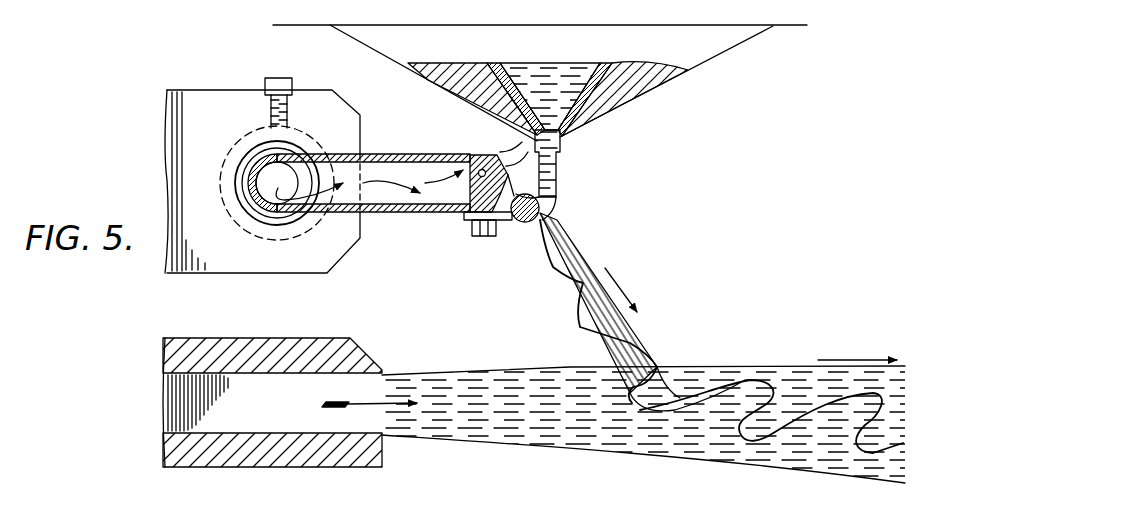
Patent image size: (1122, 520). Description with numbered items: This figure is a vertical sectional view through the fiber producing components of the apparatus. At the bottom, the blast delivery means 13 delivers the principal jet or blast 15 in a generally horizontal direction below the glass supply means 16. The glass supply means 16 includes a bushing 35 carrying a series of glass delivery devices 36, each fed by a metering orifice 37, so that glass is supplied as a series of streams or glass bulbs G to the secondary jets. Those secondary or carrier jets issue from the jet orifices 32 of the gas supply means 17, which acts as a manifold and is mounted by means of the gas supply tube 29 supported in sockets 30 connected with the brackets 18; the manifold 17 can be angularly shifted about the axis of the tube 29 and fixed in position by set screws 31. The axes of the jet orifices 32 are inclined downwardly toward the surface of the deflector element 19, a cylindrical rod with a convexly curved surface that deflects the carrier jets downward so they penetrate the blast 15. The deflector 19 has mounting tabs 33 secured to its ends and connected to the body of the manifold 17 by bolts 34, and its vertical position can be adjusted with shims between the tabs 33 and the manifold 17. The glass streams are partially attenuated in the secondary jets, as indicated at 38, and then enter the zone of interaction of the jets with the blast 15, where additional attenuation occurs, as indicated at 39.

The blast delivery means 13 is at (272, 350).
The principal jet or blast 15 is at (445, 385).
The glass supply means 16 is at (750, 41).
The gas supply means 17 is at (370, 155).
The brackets 18 is at (190, 115).
The deflector element 19 is at (547, 208).
The gas supply tube 29 is at (262, 162).
The sockets 30 is at (262, 221).
The set screws 31 is at (287, 118).
The jet orifices 32 is at (480, 160).
The mounting tabs 33 is at (468, 215).
The bolts 34 is at (484, 236).
The bushing 35 is at (600, 68).
The glass delivery devices 36 is at (560, 153).
The metering orifice 37 is at (550, 127).
The partially attenuated streams 38 is at (587, 272).
The additional attenuation 39 is at (712, 392).
The glass bulbs G is at (560, 172).